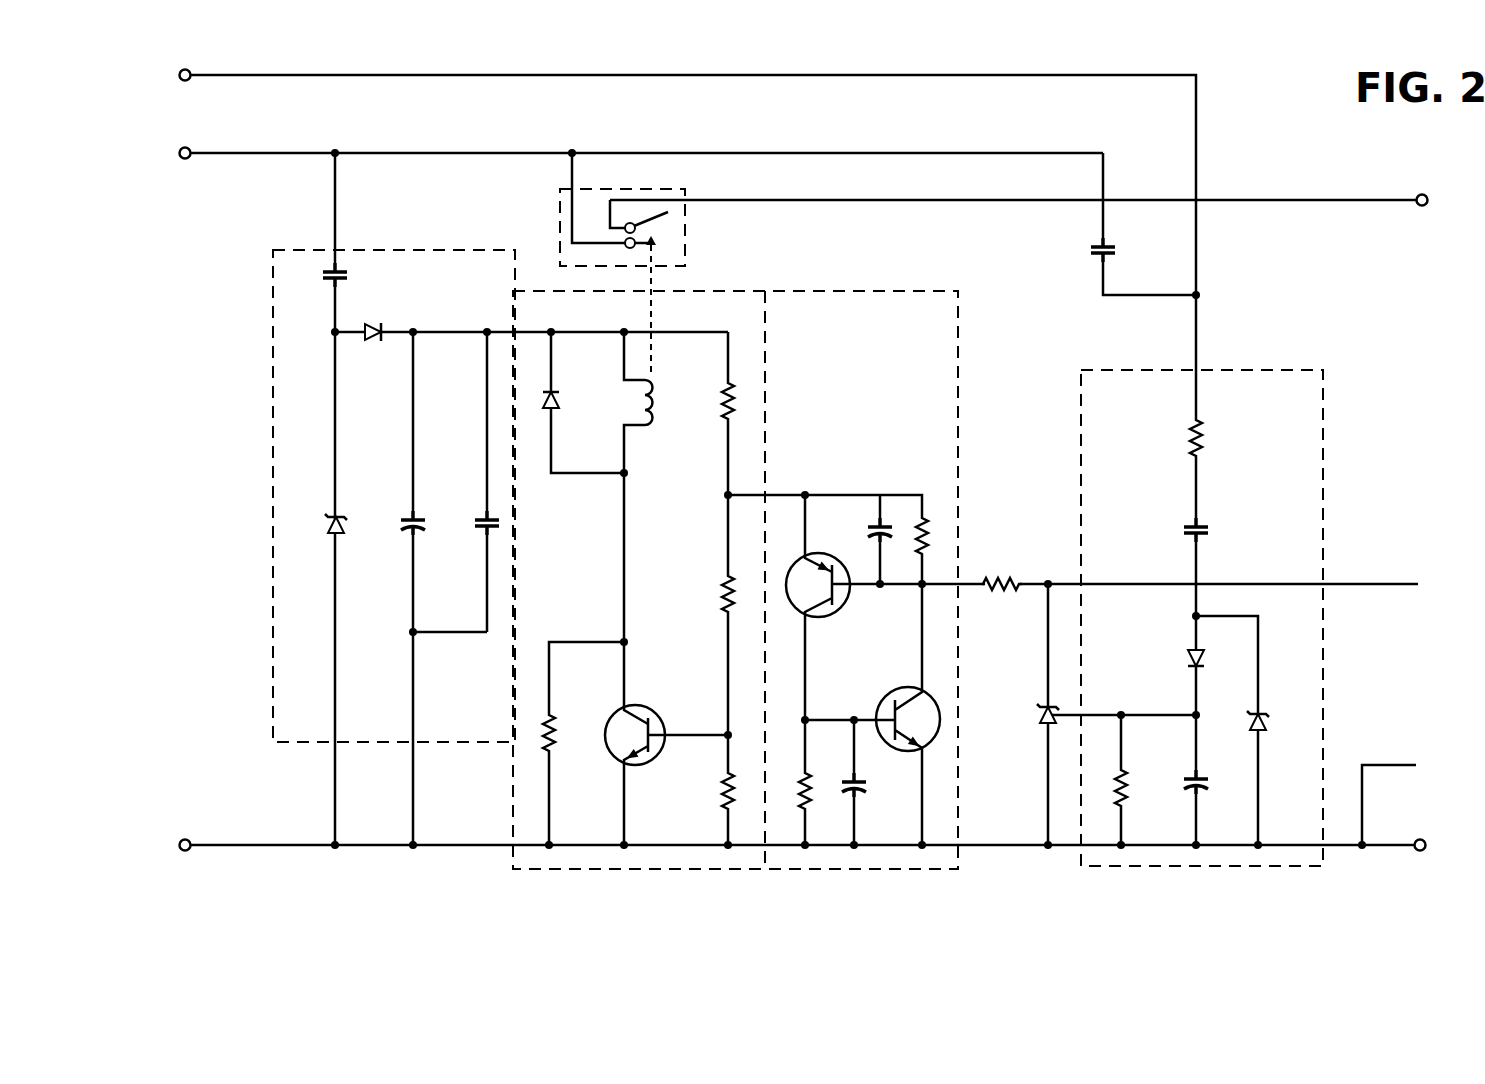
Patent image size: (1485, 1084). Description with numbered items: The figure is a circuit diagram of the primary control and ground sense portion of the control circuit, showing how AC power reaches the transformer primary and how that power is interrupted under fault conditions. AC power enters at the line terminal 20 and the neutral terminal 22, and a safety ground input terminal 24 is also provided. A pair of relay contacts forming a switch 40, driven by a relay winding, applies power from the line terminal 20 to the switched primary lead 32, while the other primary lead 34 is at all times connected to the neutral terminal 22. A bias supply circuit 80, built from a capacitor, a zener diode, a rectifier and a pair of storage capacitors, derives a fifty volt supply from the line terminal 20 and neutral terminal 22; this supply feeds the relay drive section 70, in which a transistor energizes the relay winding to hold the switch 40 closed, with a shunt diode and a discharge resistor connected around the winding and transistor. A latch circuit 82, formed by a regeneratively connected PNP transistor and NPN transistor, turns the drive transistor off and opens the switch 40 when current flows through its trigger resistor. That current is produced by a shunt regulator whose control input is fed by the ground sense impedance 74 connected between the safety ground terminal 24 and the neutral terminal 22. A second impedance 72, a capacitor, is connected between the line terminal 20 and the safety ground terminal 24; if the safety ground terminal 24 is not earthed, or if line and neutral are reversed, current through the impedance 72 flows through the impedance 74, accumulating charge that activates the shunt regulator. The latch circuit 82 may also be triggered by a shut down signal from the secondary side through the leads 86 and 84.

The line terminal 20 is at (308, 153).
The neutral terminal 22 is at (315, 848).
The safety ground input terminal 24 is at (352, 75).
The primary lead 32 is at (1395, 204).
The primary lead 34 is at (1352, 847).
The switch 40 is at (685, 240).
The relay drive circuit 70 is at (735, 291).
The impedance 72 is at (1085, 243).
The ground sense impedance 74 is at (1323, 452).
The bias supply circuit 80 is at (408, 250).
The latch circuit 82 is at (841, 580).
The lead 84 is at (1376, 766).
The lead 86 is at (1365, 584).